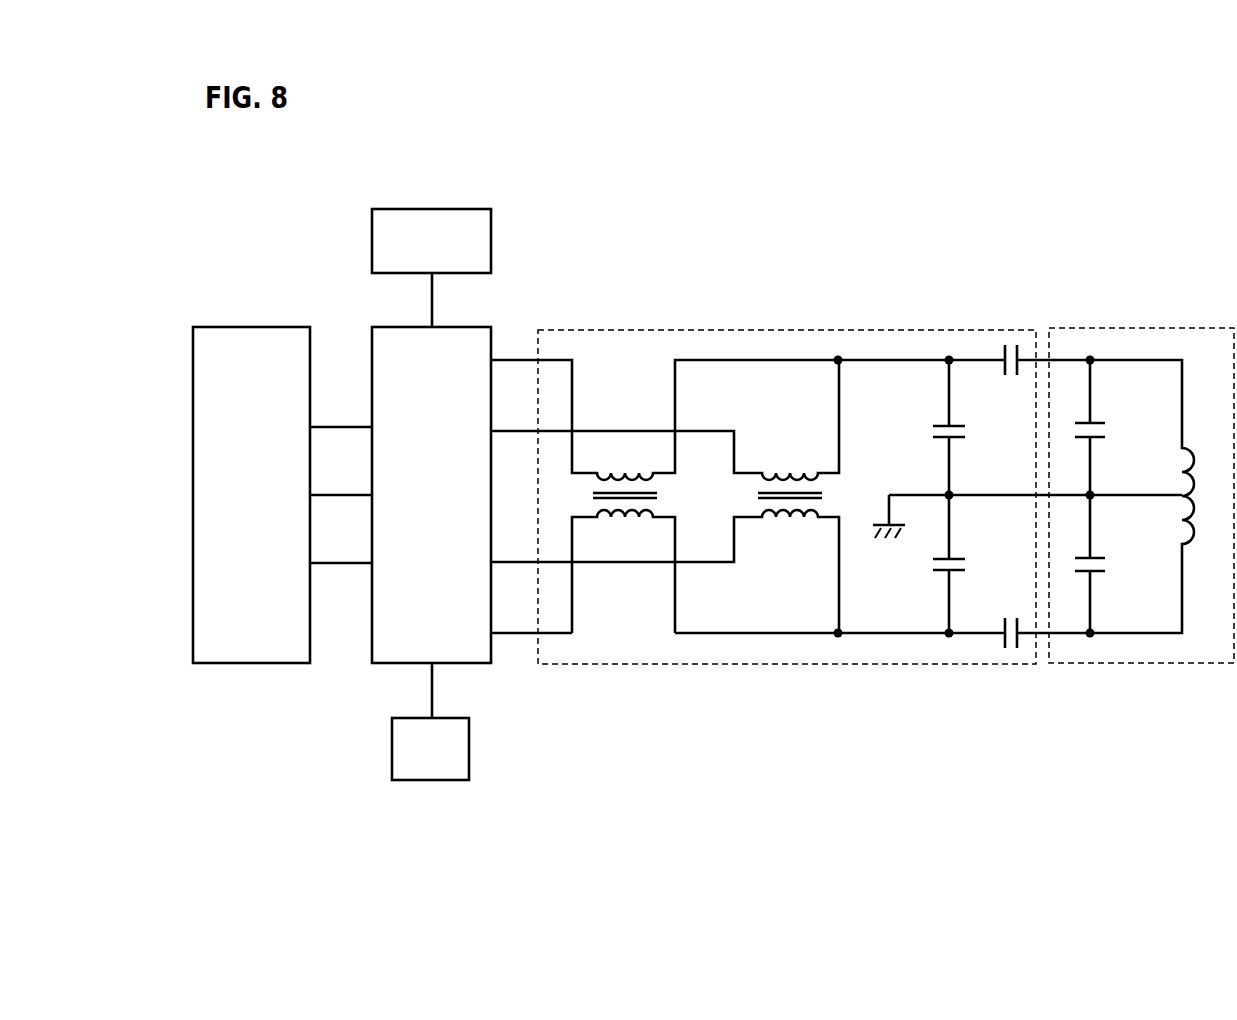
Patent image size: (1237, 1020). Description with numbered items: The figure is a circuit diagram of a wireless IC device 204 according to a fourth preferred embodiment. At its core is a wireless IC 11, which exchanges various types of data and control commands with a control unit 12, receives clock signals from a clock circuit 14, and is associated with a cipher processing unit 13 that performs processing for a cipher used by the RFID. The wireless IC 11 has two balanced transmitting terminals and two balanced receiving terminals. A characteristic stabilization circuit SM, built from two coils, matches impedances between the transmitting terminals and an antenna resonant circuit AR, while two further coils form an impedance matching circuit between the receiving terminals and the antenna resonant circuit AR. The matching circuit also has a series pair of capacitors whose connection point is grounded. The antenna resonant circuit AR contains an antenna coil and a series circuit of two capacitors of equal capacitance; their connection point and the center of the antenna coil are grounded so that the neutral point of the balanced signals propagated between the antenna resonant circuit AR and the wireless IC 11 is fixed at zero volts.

The wireless IC 11 is at (490, 327).
The control unit 12 is at (250, 327).
The cipher processing unit 13 is at (432, 208).
The clock circuit 14 is at (469, 780).
The wireless IC device 204 is at (1151, 229).
The characteristic stabilization circuit SM is at (915, 328).
The antenna resonant circuit AR is at (1203, 325).